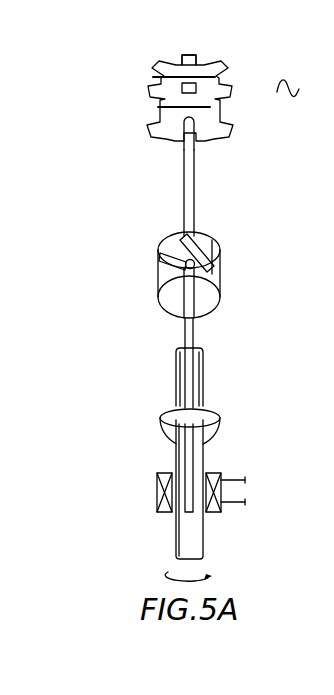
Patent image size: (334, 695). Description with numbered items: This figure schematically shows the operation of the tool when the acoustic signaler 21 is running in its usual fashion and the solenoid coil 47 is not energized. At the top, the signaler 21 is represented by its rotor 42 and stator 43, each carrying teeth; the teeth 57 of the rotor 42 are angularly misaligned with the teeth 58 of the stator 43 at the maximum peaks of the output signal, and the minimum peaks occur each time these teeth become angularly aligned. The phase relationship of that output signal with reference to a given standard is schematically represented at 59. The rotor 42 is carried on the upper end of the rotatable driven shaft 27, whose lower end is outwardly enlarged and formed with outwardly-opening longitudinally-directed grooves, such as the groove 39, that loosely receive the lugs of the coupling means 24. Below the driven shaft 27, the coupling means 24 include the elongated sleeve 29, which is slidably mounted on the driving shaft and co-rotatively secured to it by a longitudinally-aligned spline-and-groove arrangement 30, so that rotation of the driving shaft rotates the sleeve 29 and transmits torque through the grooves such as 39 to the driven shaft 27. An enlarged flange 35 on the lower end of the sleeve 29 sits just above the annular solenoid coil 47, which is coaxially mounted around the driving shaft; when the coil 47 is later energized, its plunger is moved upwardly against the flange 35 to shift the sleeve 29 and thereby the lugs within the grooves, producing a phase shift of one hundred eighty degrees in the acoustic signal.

The acoustic signaler 21 is at (107, 169).
The coupling means 24 is at (144, 268).
The driven shaft 27 is at (194, 186).
The sleeve 29 is at (203, 364).
The spline-and-groove arrangement 30 is at (179, 457).
The flange 35 is at (212, 428).
The longitudinal groove 39 is at (197, 250).
The rotor 42 is at (205, 117).
The stator 43 is at (167, 81).
The solenoid coil 47 is at (222, 474).
The rotor teeth 57 is at (190, 93).
The stator teeth 58 is at (191, 61).
The phase relationship 59 is at (292, 80).